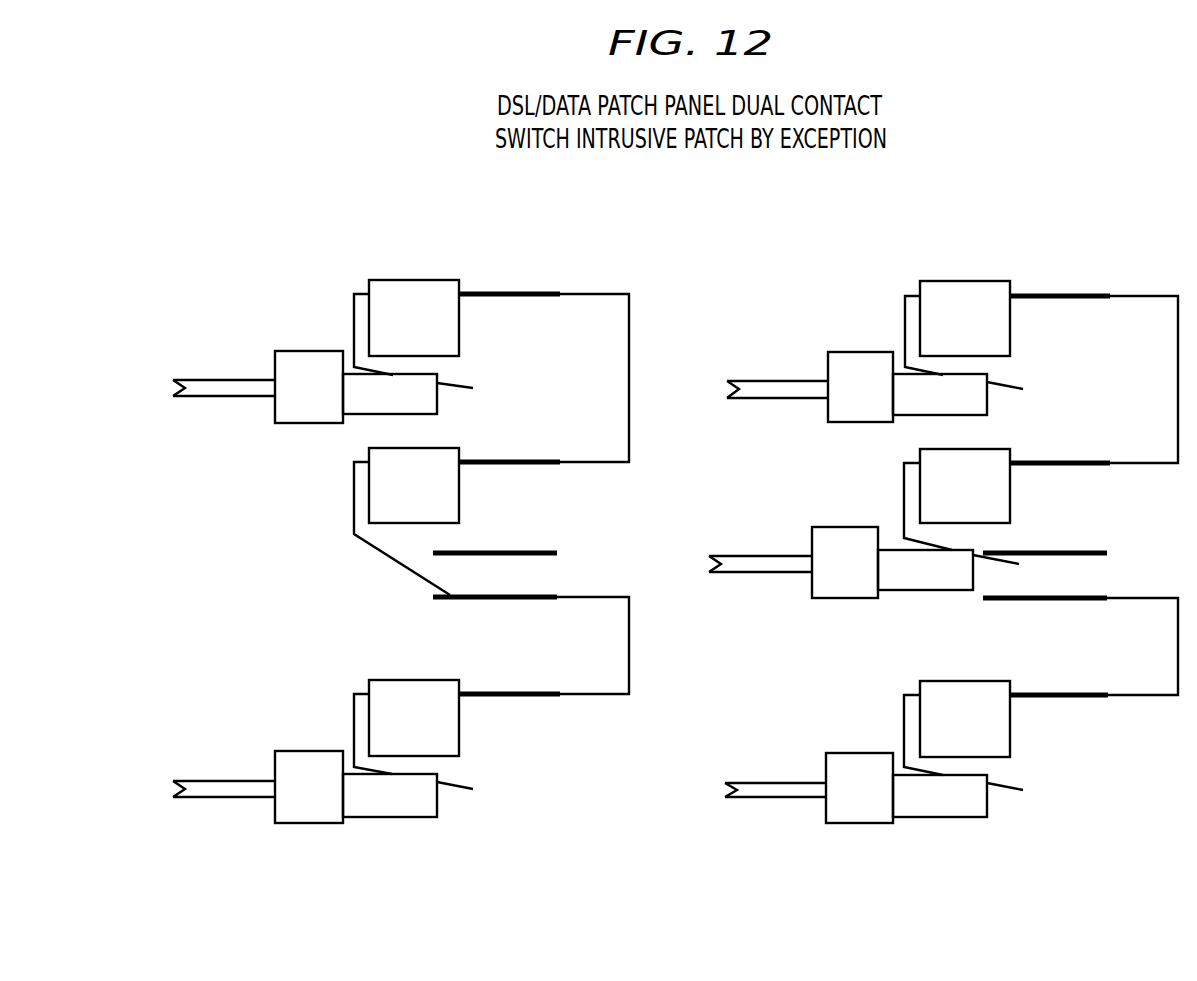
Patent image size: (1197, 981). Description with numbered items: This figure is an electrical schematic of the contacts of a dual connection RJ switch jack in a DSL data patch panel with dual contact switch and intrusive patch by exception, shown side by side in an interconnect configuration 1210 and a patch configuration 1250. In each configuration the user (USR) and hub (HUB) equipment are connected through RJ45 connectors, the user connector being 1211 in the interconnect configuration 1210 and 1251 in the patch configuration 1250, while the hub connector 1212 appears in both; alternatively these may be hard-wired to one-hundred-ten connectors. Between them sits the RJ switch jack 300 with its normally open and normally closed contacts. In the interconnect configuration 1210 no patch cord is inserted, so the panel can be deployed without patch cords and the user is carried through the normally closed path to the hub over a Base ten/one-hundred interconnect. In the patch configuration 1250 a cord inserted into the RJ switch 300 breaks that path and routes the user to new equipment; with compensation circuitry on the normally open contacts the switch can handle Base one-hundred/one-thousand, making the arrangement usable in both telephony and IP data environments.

The interconnect configuration 1210 is at (455, 488).
The user RJ45 connector 1211 is at (275, 412).
The hub RJ45 connector 1212 is at (302, 824).
The RJ switch jack 300 is at (452, 448).
The patch configuration 1250 is at (943, 489).
The user RJ45 connector in patch configuration 1251 is at (828, 408).